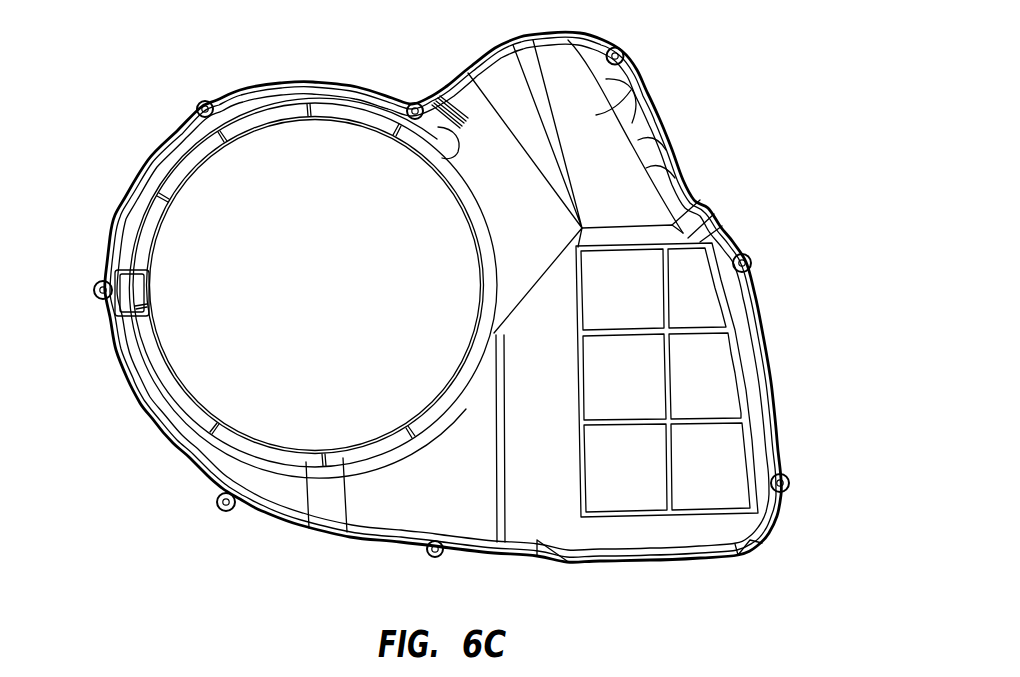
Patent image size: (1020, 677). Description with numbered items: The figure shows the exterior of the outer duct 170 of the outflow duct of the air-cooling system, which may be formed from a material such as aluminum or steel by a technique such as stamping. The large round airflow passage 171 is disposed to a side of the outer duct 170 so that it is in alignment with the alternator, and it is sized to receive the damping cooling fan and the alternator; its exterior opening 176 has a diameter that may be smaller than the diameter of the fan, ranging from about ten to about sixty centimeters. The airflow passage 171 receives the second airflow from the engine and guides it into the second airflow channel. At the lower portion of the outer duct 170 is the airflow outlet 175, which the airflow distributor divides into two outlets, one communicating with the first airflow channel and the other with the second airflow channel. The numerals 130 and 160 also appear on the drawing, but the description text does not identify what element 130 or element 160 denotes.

The cover 130 is at (788, 206).
The side wall portion 160 is at (698, 206).
The outer duct 170 is at (598, 122).
The airflow passage 171 is at (258, 385).
The airflow outlet 175 is at (668, 561).
The exterior opening 176 is at (170, 182).